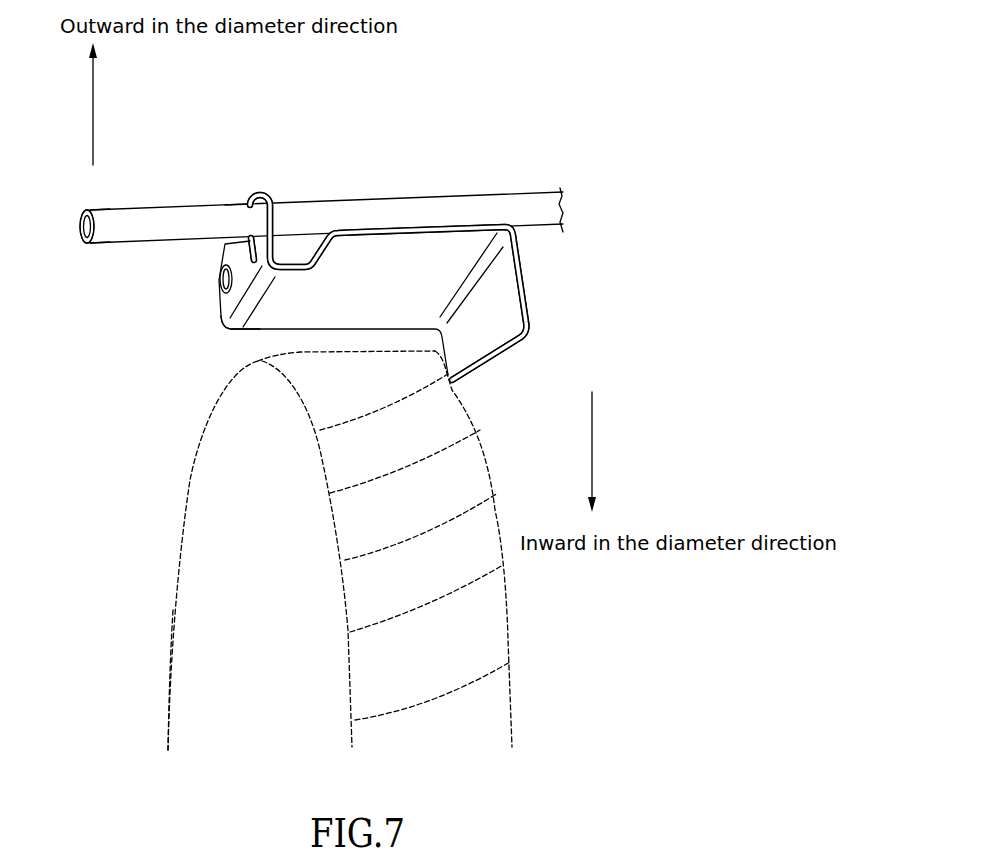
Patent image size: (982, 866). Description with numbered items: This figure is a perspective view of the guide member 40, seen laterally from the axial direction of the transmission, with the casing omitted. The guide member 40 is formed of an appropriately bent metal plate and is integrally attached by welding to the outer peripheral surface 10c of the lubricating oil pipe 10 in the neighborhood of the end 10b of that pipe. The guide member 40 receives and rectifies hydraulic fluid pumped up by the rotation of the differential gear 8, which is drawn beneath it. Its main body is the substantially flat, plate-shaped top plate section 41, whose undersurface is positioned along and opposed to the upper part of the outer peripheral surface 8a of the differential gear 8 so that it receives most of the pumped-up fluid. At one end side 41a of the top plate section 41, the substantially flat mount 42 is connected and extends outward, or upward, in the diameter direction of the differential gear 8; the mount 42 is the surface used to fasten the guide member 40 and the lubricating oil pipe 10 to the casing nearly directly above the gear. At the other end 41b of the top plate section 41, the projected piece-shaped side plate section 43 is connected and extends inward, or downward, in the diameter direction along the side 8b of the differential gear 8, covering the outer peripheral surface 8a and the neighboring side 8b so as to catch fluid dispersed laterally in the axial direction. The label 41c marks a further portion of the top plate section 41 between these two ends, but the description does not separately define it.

The differential gear 8 is at (506, 592).
The outer peripheral surface of the differential gear 8a is at (457, 463).
The side of the differential gear 8b is at (233, 612).
The lubricating oil pipe 10 is at (195, 204).
The end of the lubricating oil pipe 10b is at (107, 217).
The outer peripheral surface of the lubricating oil pipe 10c is at (238, 205).
The guide member 40 is at (397, 225).
The top plate section 41 is at (432, 244).
The one end side of the top plate section 41a is at (229, 329).
The another end of the top plate section 41b is at (490, 263).
The upper portion of wire 41c is at (364, 226).
The mount 42 is at (251, 254).
The side plate section 43 is at (507, 323).